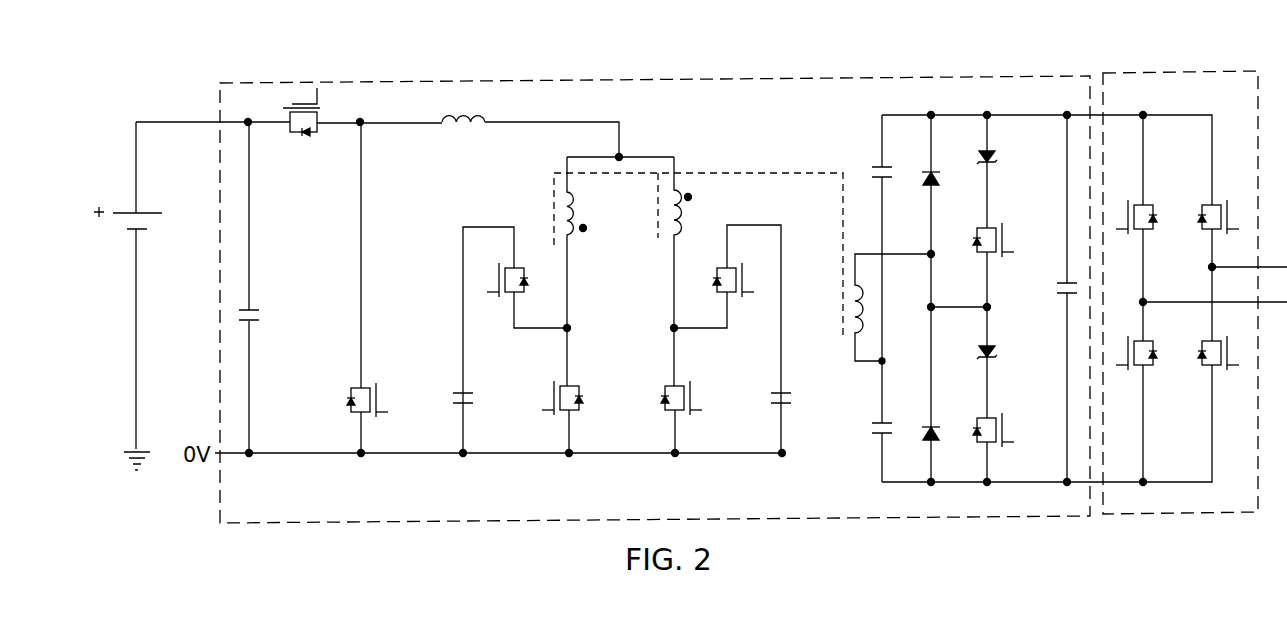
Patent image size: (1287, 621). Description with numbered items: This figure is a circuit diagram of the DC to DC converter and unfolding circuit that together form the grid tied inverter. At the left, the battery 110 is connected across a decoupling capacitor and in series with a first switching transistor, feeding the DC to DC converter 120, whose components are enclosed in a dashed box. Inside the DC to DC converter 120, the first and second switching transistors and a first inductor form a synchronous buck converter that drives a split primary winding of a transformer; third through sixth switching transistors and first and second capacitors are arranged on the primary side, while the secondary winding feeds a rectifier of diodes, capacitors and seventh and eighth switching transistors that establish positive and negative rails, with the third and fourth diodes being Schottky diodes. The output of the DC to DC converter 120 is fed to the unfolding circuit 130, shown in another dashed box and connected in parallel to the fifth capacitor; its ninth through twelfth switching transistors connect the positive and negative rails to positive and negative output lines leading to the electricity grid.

The battery 110 is at (127, 212).
The DC to DC converter 120 is at (797, 77).
The unfolding circuit 130 is at (1165, 73).